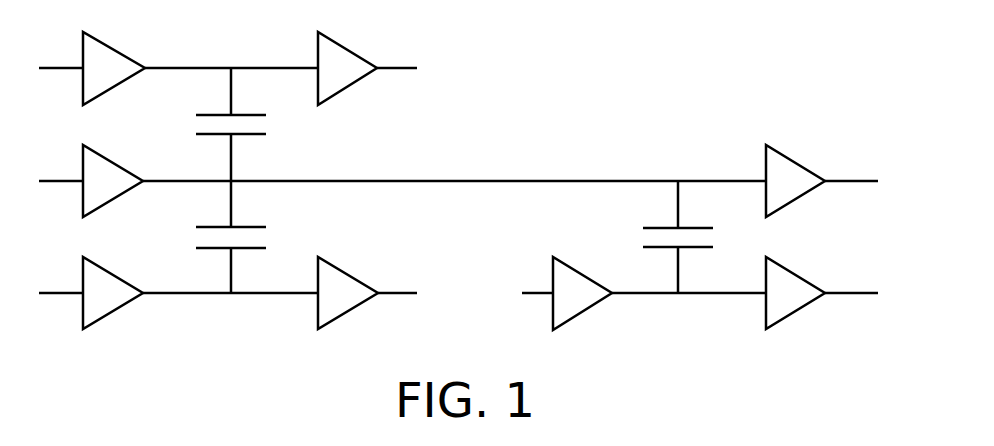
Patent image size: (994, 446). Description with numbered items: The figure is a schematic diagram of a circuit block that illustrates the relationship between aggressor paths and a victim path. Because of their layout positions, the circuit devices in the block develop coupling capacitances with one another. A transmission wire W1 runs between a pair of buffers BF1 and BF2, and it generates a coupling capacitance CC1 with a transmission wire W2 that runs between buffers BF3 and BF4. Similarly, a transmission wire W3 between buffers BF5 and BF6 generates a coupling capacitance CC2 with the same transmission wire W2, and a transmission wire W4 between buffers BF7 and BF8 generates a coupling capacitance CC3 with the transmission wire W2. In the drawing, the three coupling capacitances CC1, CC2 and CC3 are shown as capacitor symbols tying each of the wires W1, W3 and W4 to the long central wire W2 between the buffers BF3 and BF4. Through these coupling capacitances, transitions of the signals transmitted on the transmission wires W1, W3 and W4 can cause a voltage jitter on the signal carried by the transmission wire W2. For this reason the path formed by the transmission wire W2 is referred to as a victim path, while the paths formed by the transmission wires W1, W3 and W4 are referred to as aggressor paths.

The buffer BF1 is at (115, 48).
The buffer BF2 is at (348, 48).
The buffer BF3 is at (113, 159).
The buffer BF4 is at (796, 158).
The buffer BF5 is at (113, 271).
The buffer BF6 is at (348, 271).
The buffer BF7 is at (583, 272).
The buffer BF8 is at (796, 271).
The coupling capacitance CC1 is at (268, 123).
The coupling capacitance CC2 is at (268, 236).
The coupling capacitance CC3 is at (715, 237).
The transmission wire W1 is at (277, 66).
The transmission wire W2 is at (636, 180).
The transmission wire W3 is at (195, 295).
The transmission wire W4 is at (643, 295).